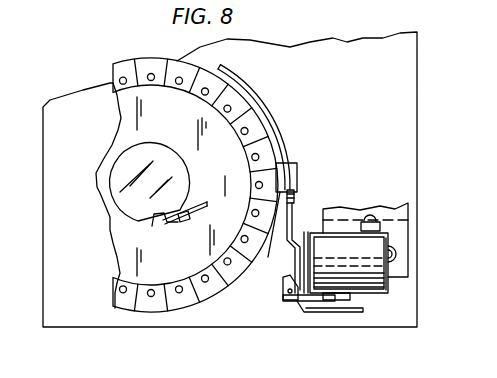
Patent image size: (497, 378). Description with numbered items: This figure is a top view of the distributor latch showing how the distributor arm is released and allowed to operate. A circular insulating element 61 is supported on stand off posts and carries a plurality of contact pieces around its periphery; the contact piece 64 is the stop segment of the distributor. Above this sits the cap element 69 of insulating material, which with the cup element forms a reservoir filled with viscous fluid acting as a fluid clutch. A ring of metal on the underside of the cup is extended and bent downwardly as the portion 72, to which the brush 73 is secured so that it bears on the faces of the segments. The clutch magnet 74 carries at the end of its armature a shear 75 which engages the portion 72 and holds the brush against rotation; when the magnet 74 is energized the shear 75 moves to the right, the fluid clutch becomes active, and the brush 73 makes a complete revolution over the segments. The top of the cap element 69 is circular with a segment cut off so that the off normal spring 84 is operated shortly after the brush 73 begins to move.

The cap element 69 is at (199, 166).
The contact piece 64 is at (210, 98).
The circular insulating element 61 is at (258, 170).
The brush 73 is at (278, 118).
The downwardly bent portion of ring 72 is at (295, 195).
The clutch magnet 74 is at (357, 246).
The shear 75 is at (287, 226).
The off normal spring 84 is at (168, 223).